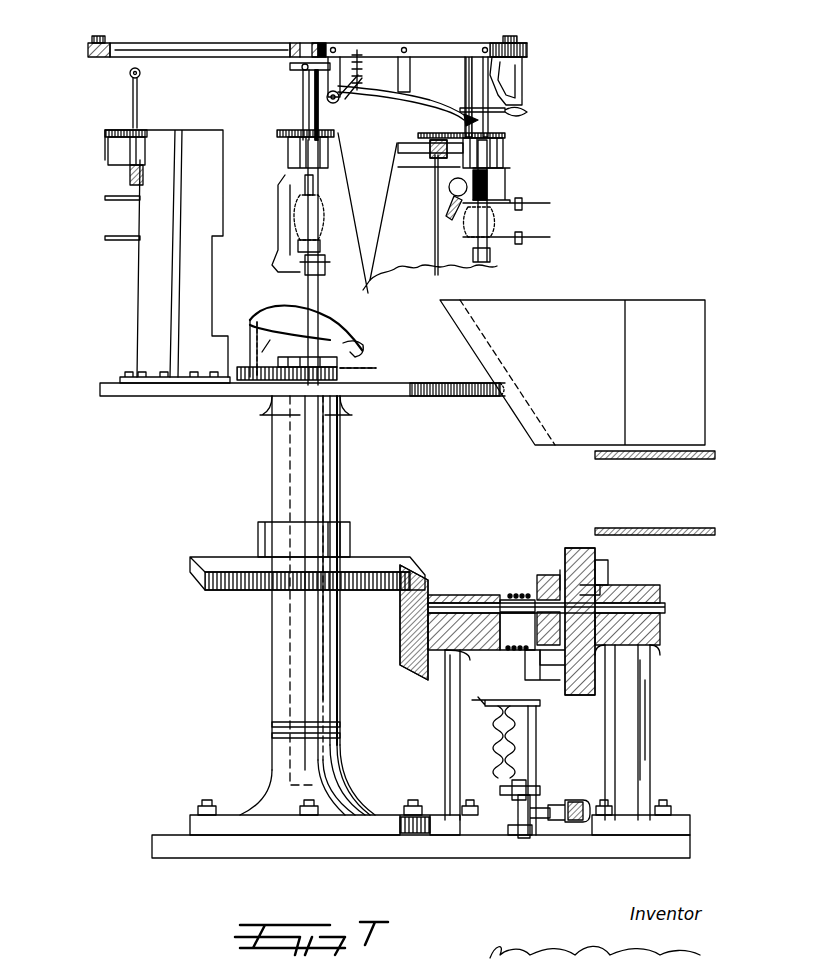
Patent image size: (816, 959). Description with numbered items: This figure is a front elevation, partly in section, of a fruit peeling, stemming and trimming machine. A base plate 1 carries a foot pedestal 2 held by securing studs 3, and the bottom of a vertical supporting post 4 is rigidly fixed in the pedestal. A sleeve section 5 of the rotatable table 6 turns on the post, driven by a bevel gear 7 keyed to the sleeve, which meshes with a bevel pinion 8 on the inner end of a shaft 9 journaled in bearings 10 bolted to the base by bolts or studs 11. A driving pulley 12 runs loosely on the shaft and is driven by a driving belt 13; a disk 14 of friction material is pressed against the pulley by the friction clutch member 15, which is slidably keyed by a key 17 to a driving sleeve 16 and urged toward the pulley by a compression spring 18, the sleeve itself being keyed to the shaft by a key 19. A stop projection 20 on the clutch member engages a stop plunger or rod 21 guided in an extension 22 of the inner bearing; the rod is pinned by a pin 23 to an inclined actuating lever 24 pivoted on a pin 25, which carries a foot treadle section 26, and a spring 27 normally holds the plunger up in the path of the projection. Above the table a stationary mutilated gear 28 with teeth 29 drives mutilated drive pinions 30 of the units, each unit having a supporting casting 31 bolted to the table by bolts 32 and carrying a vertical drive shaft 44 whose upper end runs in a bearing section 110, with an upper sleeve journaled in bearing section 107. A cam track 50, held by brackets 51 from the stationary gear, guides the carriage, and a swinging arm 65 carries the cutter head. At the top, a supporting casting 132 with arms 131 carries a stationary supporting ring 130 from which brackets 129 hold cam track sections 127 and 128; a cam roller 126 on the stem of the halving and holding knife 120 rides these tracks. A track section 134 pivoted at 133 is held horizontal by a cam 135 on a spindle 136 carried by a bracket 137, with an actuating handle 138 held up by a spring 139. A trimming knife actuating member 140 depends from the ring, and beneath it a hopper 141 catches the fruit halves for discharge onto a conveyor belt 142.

The base plate 1 is at (292, 847).
The foot pedestal 2 is at (278, 807).
The securing studs 3 is at (206, 806).
The supporting post 4 is at (300, 124).
The sleeve section 5 is at (268, 665).
The rotatable table 6 is at (420, 398).
The bevel gear 7 is at (394, 558).
The bevel pinion 8 is at (428, 572).
The shaft 9 is at (665, 629).
The bearings 10 is at (450, 592).
The bolts or studs 11 is at (450, 792).
The driving pulley 12 is at (608, 578).
The driving belt 13 is at (576, 560).
The disk of friction material 14 is at (562, 575).
The friction clutch member 15 is at (546, 575).
The driving sleeve 16 is at (510, 652).
The key 17 is at (596, 588).
The compression spring 18 is at (522, 594).
The key 19 is at (505, 604).
The stop projection 20 is at (548, 682).
The stop plunger or rod 21 is at (538, 757).
The extension 22 is at (482, 705).
The pin 23 is at (541, 792).
The actuating lever 24 is at (520, 822).
The pin 25 is at (530, 842).
The foot treadle section 26 is at (580, 830).
The spring 27 is at (495, 742).
The stationary mutilated gear 28 is at (256, 398).
The teeth 29 is at (232, 372).
The mutilated drive pinions 30 is at (348, 398).
The supporting casting 31 is at (156, 266).
The bolts 32 is at (134, 376).
The vertical drive shaft 44 is at (436, 234).
The cam track 50 is at (264, 314).
The brackets 51 is at (342, 342).
The swinging arm 65 is at (288, 248).
The bearing section 107 is at (128, 150).
The bearing section 110 is at (410, 160).
The halving and holding knife 120 is at (300, 214).
The cam roller 126 is at (130, 74).
The cam track section 127 is at (526, 84).
The cam track section 128 is at (448, 102).
The brackets 129 is at (410, 60).
The stationary supporting ring 130 is at (90, 50).
The arms 131 is at (190, 50).
The supporting casting 132 is at (318, 44).
The pivot 133 is at (340, 50).
The track section 134 is at (305, 74).
The cam 135 is at (332, 103).
The spindle 136 is at (350, 98).
The bracket 137 is at (294, 44).
The actuating handle 138 is at (464, 118).
The spring 139 is at (355, 66).
The trimming knife actuating member 140 is at (498, 180).
The hopper 141 is at (595, 324).
The conveyor belt 142 is at (658, 462).